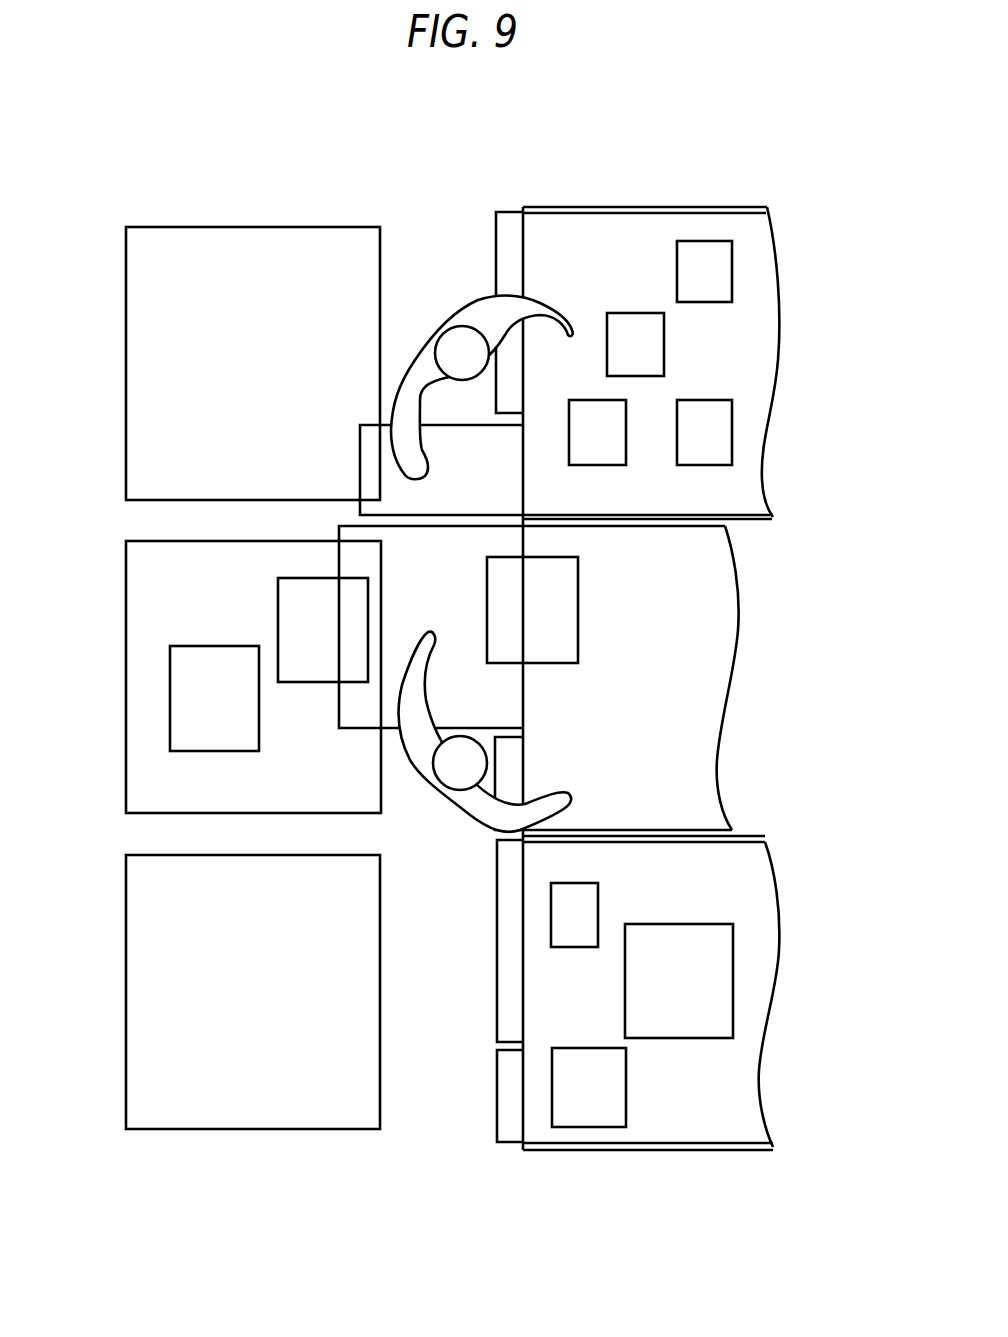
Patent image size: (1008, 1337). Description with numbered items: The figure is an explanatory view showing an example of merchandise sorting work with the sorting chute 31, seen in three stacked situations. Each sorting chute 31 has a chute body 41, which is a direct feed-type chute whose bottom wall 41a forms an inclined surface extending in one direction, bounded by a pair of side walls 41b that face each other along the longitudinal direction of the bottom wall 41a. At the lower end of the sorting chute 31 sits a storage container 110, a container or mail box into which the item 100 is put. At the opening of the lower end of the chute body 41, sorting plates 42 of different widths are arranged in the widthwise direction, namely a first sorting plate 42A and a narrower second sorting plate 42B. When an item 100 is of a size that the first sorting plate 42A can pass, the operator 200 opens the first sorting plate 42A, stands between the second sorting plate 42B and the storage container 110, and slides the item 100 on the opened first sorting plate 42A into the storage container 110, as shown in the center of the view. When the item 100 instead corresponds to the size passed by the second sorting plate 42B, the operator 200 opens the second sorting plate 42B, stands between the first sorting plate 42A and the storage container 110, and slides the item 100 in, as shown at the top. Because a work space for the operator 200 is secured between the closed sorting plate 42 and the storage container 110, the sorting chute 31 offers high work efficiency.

The sorting chute 31 is at (465, 639).
The chute body 41 is at (708, 671).
The bottom wall 41a is at (750, 378).
The side walls 41b is at (727, 205).
The sorting plate 42 is at (429, 685).
The first sorting plate 42A is at (508, 223).
The second sorting plate 42B is at (373, 442).
The item 100 is at (718, 270).
The storage container 110 is at (143, 348).
The operator 200 is at (462, 342).